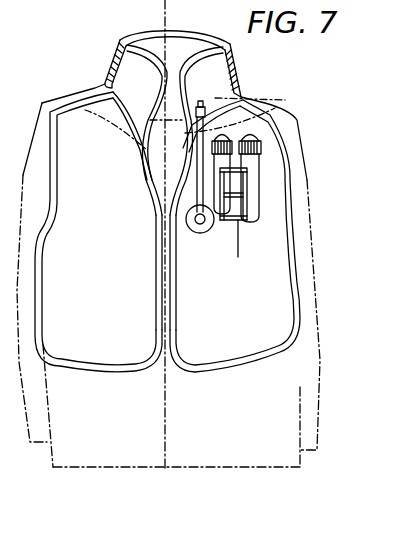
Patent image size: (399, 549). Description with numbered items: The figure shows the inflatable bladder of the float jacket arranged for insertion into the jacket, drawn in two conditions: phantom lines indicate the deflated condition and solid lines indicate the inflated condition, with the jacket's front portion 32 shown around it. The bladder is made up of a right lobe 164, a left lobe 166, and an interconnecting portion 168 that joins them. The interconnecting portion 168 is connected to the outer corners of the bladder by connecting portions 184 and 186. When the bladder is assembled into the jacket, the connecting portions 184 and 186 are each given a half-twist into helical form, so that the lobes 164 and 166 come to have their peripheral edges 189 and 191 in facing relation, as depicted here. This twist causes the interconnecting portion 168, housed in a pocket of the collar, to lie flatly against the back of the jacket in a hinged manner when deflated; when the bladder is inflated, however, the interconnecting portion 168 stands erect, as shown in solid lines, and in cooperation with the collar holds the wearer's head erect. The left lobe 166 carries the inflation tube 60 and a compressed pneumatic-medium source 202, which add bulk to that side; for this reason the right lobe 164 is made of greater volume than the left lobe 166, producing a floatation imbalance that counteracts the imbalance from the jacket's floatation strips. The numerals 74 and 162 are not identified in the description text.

The front portion 32 is at (57, 0).
The garment portion 74 is at (10, 19).
The vest 162 is at (168, 254).
The right lobe 164 is at (101, 219).
The left lobe 166 is at (235, 217).
The interconnecting portion 168 is at (186, 46).
The connecting portion 184 is at (100, 130).
The connecting portion 186 is at (160, 203).
The peripheral edge 189 is at (158, 262).
The peripheral edge 191 is at (172, 295).
The inflation tube 60 is at (198, 180).
The compressed pneumatic-medium source 202 is at (260, 212).